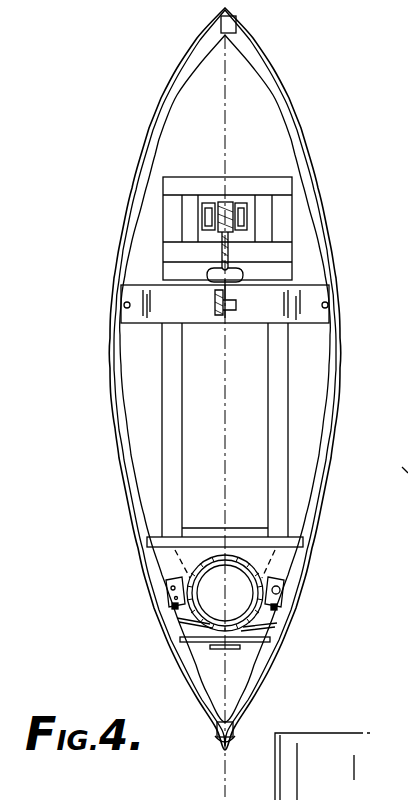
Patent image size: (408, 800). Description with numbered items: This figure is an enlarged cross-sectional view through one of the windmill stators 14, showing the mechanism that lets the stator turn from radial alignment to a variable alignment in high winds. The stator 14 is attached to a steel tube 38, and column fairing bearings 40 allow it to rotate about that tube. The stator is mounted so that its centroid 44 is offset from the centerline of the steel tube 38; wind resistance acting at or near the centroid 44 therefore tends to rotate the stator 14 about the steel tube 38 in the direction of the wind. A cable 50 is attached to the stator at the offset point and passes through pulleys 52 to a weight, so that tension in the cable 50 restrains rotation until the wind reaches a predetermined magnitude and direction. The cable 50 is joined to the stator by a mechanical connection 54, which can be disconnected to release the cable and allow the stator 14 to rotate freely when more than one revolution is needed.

The stator 14 is at (338, 448).
The steel tube 38 is at (257, 572).
The column fairing bearing 40 is at (277, 607).
The centroid 44 is at (225, 398).
The cable 50 is at (228, 257).
The pulley 52 is at (238, 218).
The mechanical connection 54 is at (245, 277).